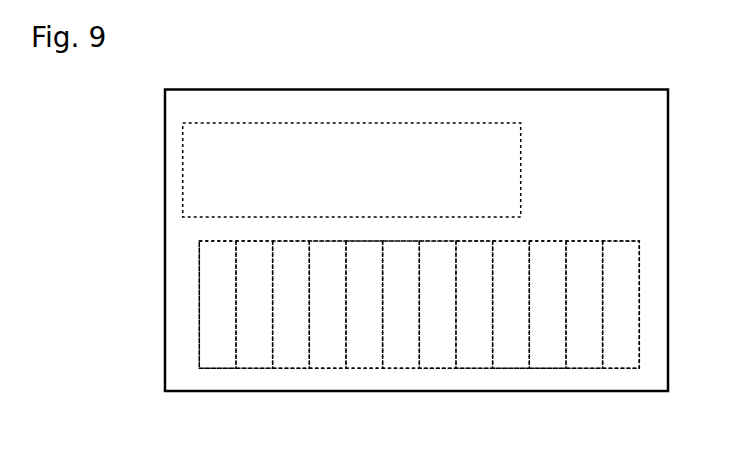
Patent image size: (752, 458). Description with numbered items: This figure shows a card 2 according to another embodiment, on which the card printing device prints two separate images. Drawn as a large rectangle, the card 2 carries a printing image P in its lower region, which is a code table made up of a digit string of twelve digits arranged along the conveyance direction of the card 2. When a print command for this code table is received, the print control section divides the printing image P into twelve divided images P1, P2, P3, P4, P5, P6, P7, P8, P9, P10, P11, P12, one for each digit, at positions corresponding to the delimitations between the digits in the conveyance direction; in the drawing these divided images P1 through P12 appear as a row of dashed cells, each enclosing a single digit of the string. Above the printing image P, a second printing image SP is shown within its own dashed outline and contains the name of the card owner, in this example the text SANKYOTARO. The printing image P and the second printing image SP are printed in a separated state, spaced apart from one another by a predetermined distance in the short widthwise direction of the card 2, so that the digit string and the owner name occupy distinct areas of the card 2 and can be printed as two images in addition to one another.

The card 2 is at (668, 164).
The second printing image SP is at (523, 178).
The printing image P is at (451, 339).
The divided image P1 is at (215, 370).
The divided image P2 is at (252, 370).
The divided image P3 is at (290, 370).
The divided image P4 is at (327, 370).
The divided image P5 is at (363, 370).
The divided image P6 is at (399, 370).
The divided image P7 is at (435, 370).
The divided image P8 is at (473, 370).
The divided image P9 is at (511, 370).
The divided image P10 is at (548, 370).
The divided image P11 is at (579, 370).
The divided image P12 is at (624, 370).